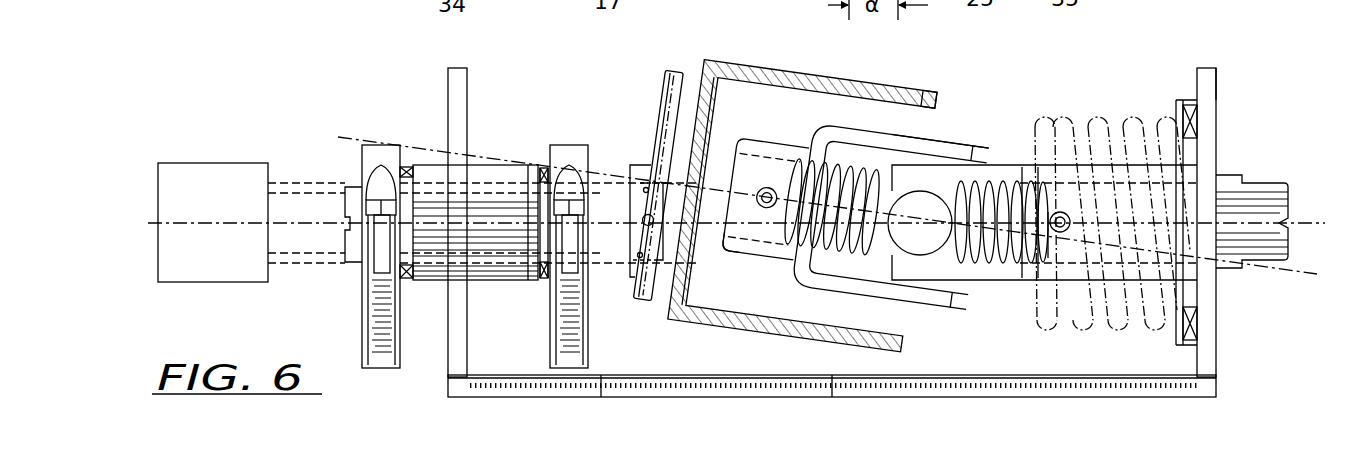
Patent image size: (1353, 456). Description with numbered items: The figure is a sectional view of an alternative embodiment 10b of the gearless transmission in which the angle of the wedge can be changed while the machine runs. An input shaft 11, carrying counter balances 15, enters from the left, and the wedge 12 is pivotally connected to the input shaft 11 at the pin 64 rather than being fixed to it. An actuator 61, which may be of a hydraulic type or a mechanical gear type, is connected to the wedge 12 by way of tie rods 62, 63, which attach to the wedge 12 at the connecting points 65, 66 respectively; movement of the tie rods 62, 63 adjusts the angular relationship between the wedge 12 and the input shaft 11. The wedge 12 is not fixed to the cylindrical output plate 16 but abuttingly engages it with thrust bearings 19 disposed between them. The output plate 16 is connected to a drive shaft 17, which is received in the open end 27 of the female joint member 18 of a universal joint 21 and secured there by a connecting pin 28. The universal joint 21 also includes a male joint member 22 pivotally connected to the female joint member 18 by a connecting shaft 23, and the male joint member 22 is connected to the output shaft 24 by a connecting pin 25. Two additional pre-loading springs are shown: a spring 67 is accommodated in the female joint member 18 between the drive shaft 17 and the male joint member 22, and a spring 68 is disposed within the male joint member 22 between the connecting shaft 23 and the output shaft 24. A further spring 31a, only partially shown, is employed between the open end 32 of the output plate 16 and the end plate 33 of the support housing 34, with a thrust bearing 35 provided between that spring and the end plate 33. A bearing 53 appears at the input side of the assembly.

The gearless transmission embodiment 10b is at (1239, 44).
The input shaft 11 is at (349, 197).
The wedge 12 is at (680, 67).
The counter balances 15 is at (382, 338).
The output plate 16 is at (731, 56).
The drive shaft 17 is at (723, 163).
The female joint member 18 is at (859, 123).
The thrust bearings 19 is at (497, 140).
The universal joint 21 is at (899, 125).
The male joint member 22 is at (930, 284).
The connecting shaft 23 is at (935, 212).
The output shaft 24 is at (1268, 203).
The connecting pin 25 is at (1053, 207).
The open end 27 is at (716, 252).
The connecting pin 28 is at (768, 190).
The spring 31a is at (1138, 118).
The open end 32 is at (938, 108).
The end plate 33 is at (1207, 138).
The support housing 34 is at (358, 155).
The thrust bearing 35 is at (1187, 100).
The bearing 53 is at (387, 160).
The actuator 61 is at (212, 163).
The tie rod 62 is at (312, 266).
The tie rod 63 is at (305, 180).
The pin 64 is at (644, 225).
The connecting point 65 is at (642, 258).
The connecting point 66 is at (645, 188).
The spring 67 is at (868, 245).
The spring 68 is at (1013, 180).